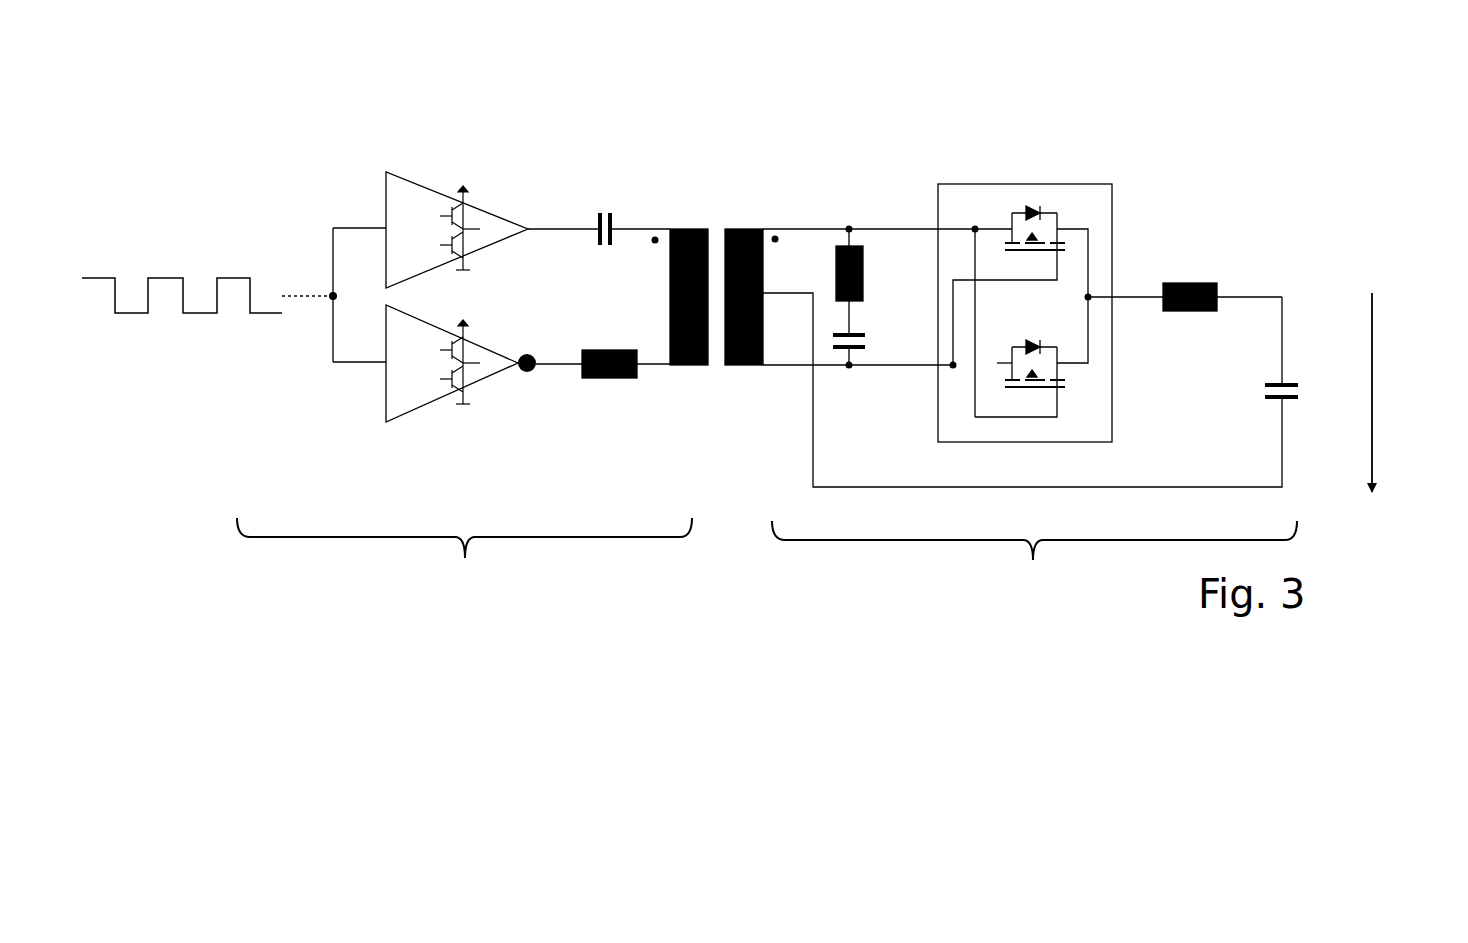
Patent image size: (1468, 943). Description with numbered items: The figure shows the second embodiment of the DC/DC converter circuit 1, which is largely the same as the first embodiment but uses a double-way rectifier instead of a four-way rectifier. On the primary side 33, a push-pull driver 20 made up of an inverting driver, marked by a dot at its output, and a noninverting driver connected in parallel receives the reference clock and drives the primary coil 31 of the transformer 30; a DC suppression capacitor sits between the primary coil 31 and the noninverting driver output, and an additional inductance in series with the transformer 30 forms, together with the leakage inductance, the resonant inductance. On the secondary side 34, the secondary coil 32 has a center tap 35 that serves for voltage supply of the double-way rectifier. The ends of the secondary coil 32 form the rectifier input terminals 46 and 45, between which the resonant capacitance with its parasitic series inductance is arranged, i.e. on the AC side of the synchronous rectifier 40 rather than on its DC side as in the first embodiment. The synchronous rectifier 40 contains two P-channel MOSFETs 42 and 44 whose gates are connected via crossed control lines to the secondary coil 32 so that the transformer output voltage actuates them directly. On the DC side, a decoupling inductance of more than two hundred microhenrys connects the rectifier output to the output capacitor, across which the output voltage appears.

The resonant converter 1 is at (1253, 167).
The driver circuit 20 is at (487, 193).
The transformer 30 is at (717, 180).
The primary winding 31 is at (680, 226).
The secondary coil 32 is at (752, 226).
The primary side 33 is at (464, 555).
The secondary side 34 is at (1034, 557).
The center tap 35 is at (766, 291).
The rectifier 40 is at (1028, 181).
The MOSFET 42 is at (1057, 205).
The MOSFET 44 is at (1085, 388).
The second secondary terminal 45 is at (893, 368).
The first secondary terminal 46 is at (908, 226).